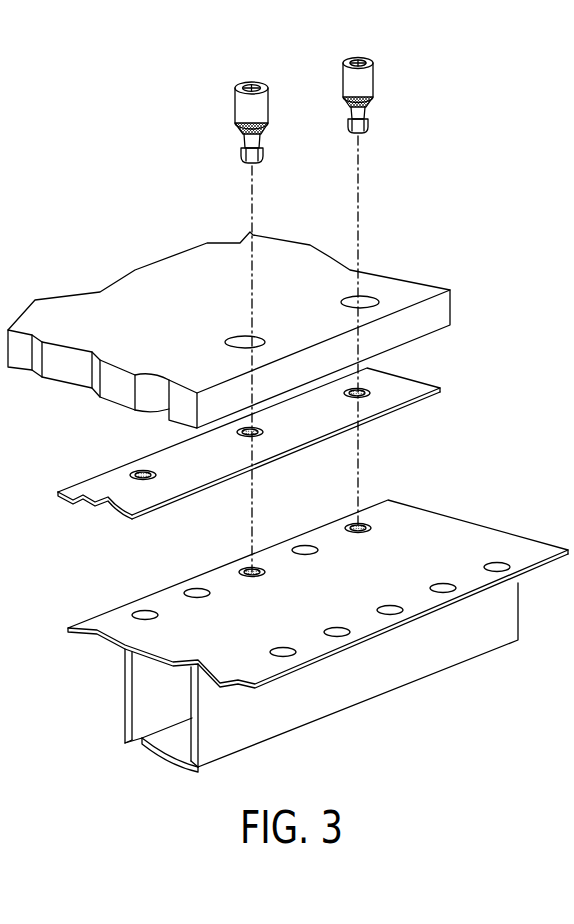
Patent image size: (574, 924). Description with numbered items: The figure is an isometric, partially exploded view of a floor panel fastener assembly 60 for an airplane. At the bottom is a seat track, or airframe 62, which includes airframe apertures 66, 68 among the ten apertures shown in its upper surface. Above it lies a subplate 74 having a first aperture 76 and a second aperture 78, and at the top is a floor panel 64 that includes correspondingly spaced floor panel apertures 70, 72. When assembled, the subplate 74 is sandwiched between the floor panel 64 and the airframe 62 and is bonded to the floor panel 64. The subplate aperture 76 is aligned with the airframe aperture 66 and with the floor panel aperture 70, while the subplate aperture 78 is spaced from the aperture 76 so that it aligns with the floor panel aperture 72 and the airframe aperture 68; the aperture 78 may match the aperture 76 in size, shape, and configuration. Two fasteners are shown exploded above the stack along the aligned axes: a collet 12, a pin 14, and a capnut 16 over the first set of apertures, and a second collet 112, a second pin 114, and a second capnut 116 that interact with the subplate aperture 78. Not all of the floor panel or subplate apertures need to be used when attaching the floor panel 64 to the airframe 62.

The collet 12 is at (243, 152).
The pin 14 is at (245, 132).
The capnut 16 is at (243, 98).
The floor panel fastener assembly 60 is at (158, 186).
The airframe 62 is at (463, 530).
The floor panel 64 is at (408, 285).
The airframe aperture 66 is at (247, 570).
The airframe aperture 68 is at (361, 524).
The floor panel aperture 70 is at (225, 339).
The floor panel aperture 72 is at (363, 300).
The subplate 74 is at (405, 381).
The first aperture 76 is at (261, 430).
The second aperture 78 is at (368, 395).
The second collet 112 is at (368, 119).
The second pin 114 is at (369, 106).
The second capnut 116 is at (368, 79).